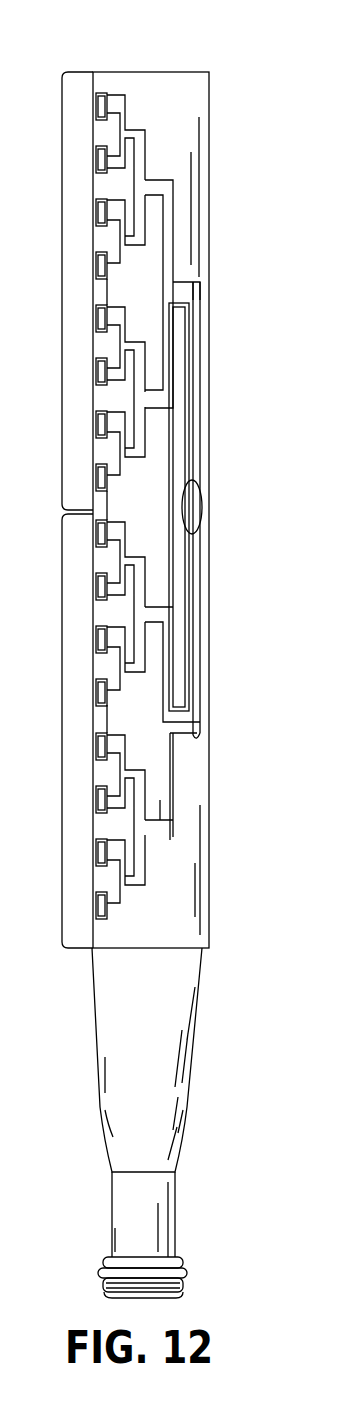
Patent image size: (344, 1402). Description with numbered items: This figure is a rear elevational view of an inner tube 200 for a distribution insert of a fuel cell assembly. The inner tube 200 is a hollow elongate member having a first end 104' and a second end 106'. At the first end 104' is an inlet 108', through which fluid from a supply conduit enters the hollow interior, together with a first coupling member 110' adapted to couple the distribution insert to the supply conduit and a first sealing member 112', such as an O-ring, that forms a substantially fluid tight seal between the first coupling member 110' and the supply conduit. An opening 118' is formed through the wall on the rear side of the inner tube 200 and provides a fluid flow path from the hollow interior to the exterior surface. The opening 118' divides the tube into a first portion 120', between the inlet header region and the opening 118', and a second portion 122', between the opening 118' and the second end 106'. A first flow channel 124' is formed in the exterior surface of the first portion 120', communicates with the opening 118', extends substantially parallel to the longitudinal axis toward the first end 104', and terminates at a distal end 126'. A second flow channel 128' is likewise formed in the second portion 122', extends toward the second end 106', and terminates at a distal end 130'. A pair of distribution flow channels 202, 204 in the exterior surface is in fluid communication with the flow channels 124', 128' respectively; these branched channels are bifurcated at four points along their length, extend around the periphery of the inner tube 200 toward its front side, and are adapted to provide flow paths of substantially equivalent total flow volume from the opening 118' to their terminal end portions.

The inner tube 200 is at (218, 44).
The second end 106' is at (190, 510).
The second portion 122' is at (52, 291).
The first portion 120' is at (52, 731).
The distribution flow channel 204 is at (175, 235).
The distal end 130' is at (234, 279).
The second flow channel 128' is at (234, 507).
The opening 118' is at (241, 507).
The first flow channel 124' is at (246, 508).
The distal end 126' is at (246, 738).
The distribution flow channel 202 is at (178, 782).
The first end 104' is at (190, 1102).
The first coupling member 110' is at (193, 1257).
The first sealing member 112' is at (195, 1290).
The inlet 108' is at (99, 1301).